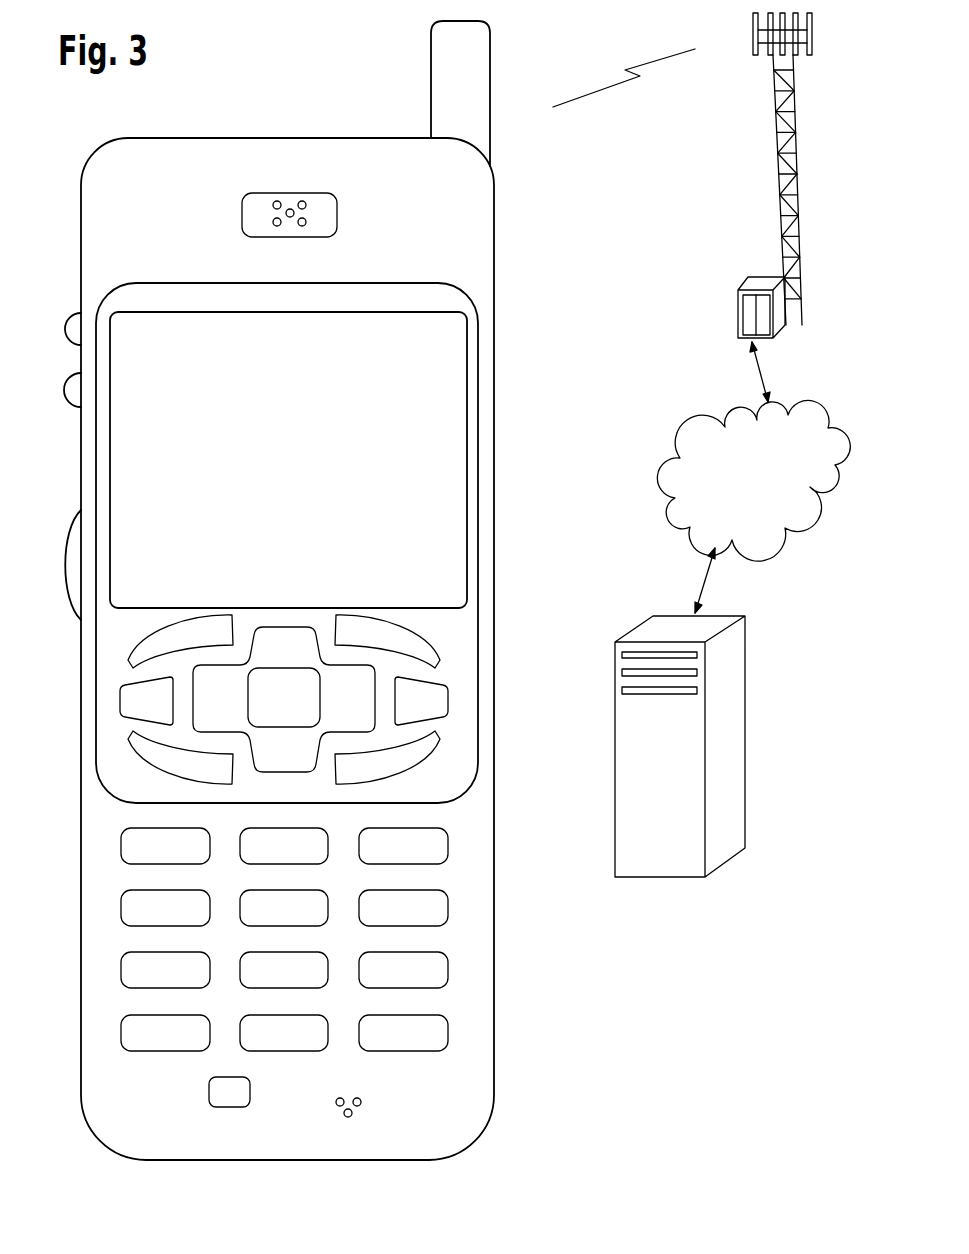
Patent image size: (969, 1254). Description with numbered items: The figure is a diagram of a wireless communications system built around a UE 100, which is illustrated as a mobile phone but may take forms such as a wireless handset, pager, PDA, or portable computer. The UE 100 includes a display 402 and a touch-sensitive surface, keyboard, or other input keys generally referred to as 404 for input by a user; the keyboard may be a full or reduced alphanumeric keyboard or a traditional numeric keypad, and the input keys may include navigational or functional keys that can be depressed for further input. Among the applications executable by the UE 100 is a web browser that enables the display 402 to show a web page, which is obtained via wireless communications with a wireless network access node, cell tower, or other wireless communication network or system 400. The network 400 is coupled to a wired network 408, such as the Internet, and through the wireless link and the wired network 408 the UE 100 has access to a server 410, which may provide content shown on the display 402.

The UE 100 is at (125, 1160).
The wireless communication network or system 400 is at (770, 188).
The display 402 is at (467, 323).
The input keys 404 is at (503, 615).
The wired network 408 is at (680, 530).
The server 410 is at (660, 878).